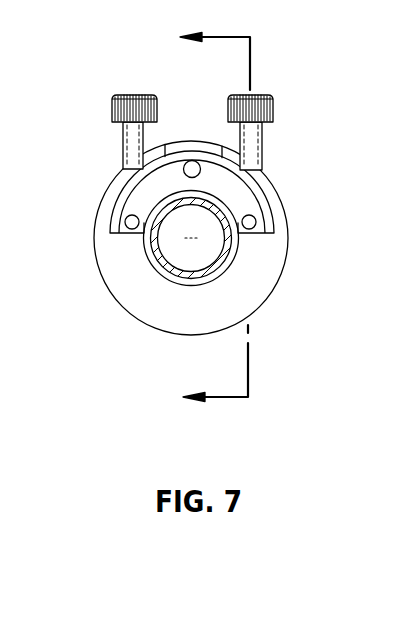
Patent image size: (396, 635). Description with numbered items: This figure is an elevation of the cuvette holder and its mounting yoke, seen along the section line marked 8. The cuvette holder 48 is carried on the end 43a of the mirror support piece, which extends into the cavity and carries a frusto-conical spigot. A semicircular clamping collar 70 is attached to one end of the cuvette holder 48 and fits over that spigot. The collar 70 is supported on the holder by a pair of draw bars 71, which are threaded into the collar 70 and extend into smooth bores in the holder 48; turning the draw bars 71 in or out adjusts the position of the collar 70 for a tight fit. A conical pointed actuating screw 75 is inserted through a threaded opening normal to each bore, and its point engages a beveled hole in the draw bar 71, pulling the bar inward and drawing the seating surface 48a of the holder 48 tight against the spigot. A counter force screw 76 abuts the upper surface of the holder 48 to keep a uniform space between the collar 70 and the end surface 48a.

The section line 8- 8 is at (215, 221).
The end of mirror support piece 43a is at (157, 268).
The cuvette holder 48 is at (97, 214).
The seating surface of cuvette holder 48a is at (214, 326).
The semicircular clamping collar 70 is at (250, 186).
The draw bars 71 is at (132, 222).
The conical pointed actuating screw 75 is at (121, 134).
The counter force screw 76 is at (192, 168).